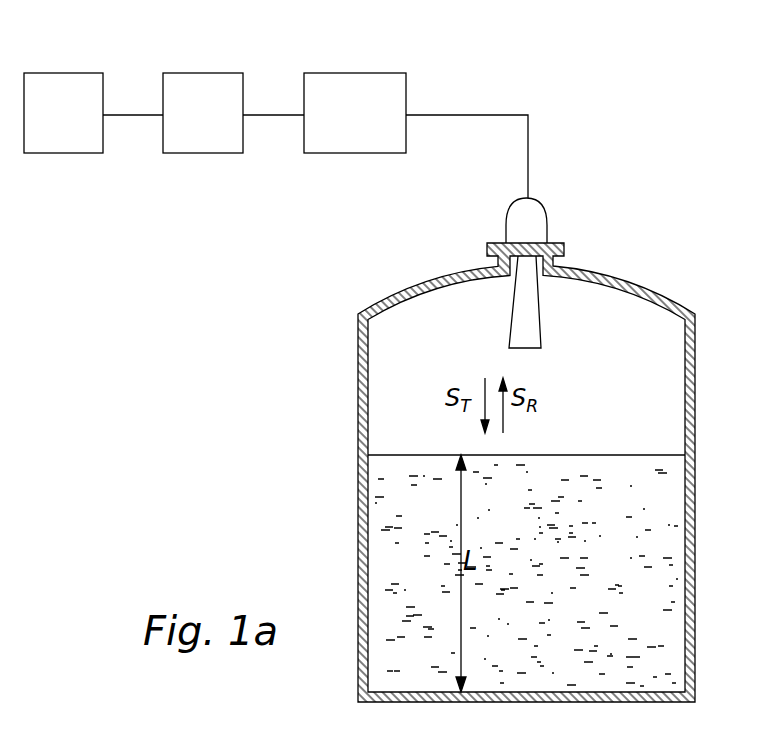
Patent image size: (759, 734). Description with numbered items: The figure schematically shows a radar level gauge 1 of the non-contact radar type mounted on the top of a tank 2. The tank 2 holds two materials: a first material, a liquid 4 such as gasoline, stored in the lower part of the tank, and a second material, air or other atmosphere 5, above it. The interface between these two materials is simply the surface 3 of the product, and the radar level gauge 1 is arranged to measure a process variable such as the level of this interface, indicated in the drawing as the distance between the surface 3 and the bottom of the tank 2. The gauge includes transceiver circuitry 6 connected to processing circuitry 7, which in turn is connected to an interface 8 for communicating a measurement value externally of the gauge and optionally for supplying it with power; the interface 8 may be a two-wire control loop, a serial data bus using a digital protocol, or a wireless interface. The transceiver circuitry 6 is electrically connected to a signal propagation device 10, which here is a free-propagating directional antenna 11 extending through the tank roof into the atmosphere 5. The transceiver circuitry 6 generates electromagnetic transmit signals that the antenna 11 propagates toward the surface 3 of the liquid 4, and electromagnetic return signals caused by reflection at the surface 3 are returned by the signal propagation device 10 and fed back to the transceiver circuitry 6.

The radar level gauge 1 is at (634, 182).
The tank 2 is at (693, 368).
The surface 3 is at (428, 455).
The liquid 4 is at (583, 583).
The atmosphere 5 is at (615, 427).
The transceiver circuitry 6 is at (357, 87).
The processing circuitry 7 is at (190, 80).
The interface 8 is at (63, 82).
The signal propagation device 10 is at (566, 306).
The free-propagating directional antenna 11 is at (536, 330).